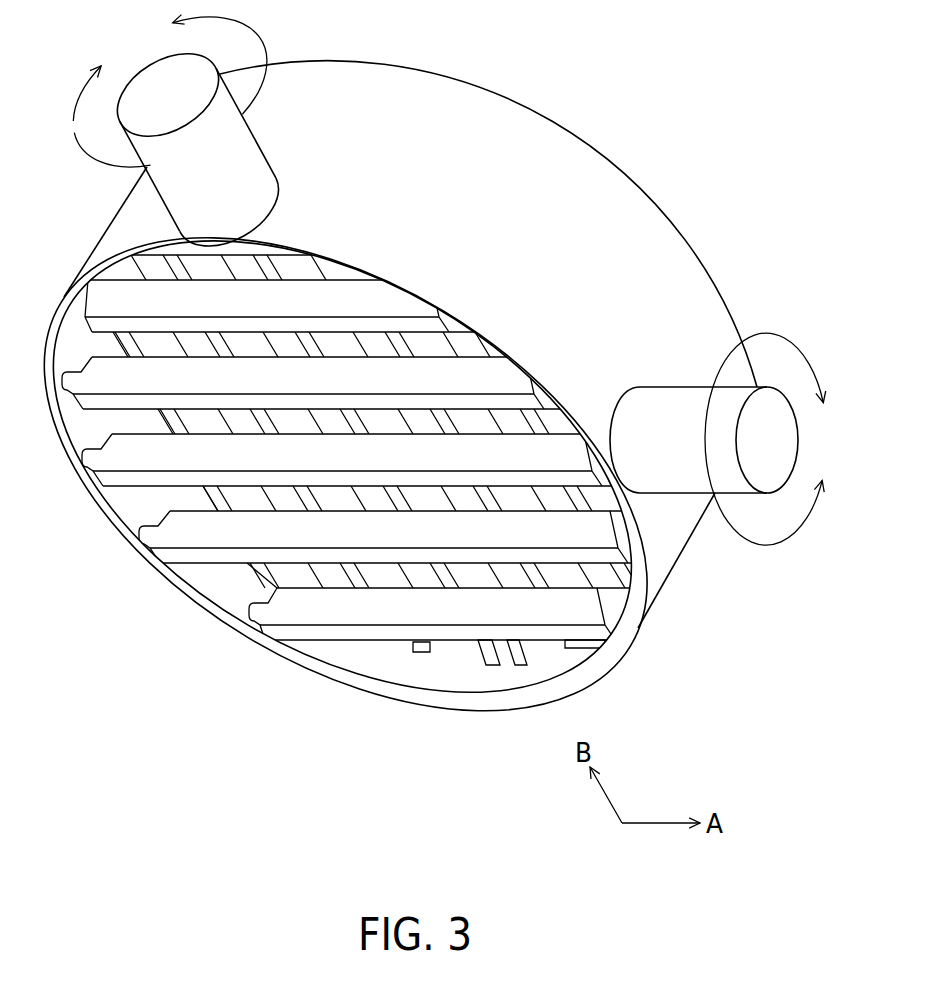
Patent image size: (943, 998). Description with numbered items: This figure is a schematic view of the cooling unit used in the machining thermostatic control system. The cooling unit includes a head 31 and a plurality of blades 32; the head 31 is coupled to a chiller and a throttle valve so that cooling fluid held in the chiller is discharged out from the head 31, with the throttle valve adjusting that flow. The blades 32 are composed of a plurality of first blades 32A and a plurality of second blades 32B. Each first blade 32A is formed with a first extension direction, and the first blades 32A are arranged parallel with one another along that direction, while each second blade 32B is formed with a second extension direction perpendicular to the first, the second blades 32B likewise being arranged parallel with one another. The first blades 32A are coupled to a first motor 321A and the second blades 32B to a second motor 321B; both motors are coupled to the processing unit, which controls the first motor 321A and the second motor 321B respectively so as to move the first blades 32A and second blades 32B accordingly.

The head 31 is at (565, 112).
The first motor 321A is at (668, 410).
The second motor 321B is at (247, 153).
The blades 32 is at (216, 713).
The first blades 32A is at (302, 633).
The second blades 32B is at (263, 570).